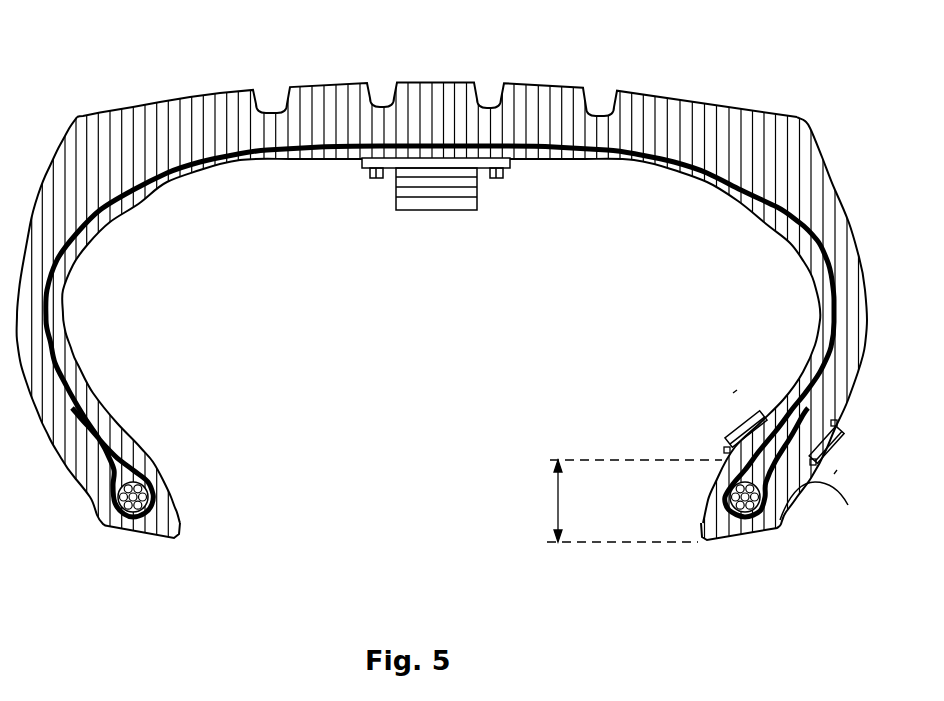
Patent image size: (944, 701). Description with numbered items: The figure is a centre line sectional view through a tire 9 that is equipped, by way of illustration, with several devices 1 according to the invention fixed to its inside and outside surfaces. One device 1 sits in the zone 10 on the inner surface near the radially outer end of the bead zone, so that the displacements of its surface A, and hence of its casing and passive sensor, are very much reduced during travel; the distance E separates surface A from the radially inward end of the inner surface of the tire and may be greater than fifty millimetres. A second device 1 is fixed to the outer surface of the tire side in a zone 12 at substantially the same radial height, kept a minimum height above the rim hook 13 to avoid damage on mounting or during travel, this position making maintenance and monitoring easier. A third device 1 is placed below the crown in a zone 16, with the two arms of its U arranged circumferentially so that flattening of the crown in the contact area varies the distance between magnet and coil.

The device 1 is at (822, 435).
The tire 9 is at (186, 233).
The zone 10 is at (731, 381).
The zone 12 is at (843, 481).
The rim hook 13 is at (815, 483).
The zone 16 is at (432, 158).
The distance E is at (628, 501).